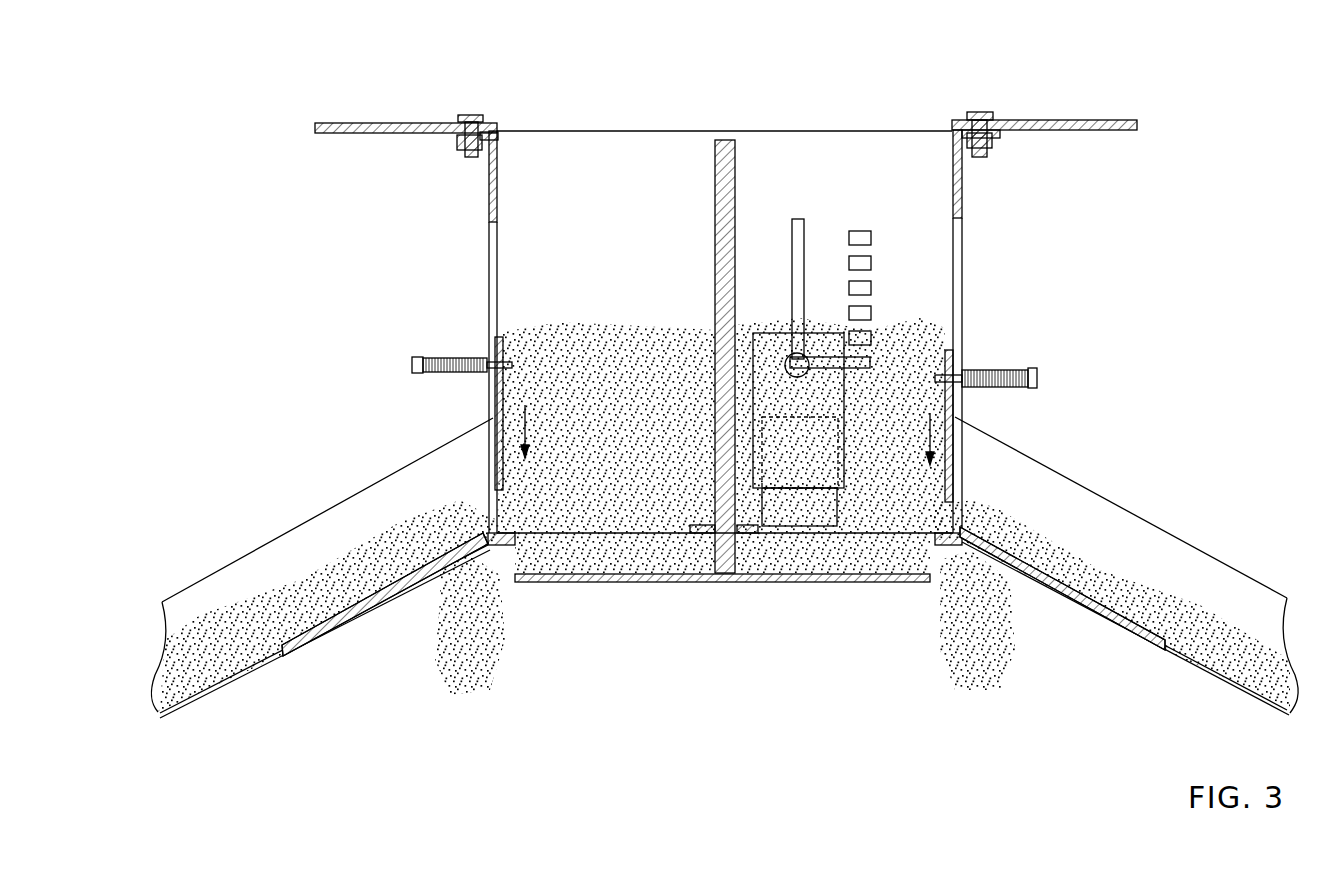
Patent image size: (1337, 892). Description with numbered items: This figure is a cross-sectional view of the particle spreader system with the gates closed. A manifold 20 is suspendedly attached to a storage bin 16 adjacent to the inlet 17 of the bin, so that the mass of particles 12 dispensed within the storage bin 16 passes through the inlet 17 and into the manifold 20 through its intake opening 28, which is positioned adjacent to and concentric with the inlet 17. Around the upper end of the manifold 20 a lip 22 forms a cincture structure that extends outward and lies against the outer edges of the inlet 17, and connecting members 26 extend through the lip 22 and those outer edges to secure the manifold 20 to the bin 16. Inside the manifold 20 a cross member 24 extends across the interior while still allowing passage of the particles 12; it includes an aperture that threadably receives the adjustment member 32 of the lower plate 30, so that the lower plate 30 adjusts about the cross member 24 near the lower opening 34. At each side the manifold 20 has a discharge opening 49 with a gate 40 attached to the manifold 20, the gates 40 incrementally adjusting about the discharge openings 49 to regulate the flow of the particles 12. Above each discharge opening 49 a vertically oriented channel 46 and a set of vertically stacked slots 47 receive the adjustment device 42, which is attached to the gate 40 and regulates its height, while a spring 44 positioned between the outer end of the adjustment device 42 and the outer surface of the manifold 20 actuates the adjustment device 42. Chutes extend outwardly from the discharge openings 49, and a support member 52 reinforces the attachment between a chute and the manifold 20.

The mass of particles 12 is at (475, 690).
The storage bin 16 is at (1078, 124).
The inlet 17 is at (497, 131).
The manifold 20 is at (962, 208).
The lip 22 is at (460, 142).
The cross member 24 is at (700, 528).
The connecting members 26 is at (467, 158).
The intake opening 28 is at (498, 204).
The lower plate 30 is at (898, 582).
The adjustment member 32 is at (738, 140).
The lower opening 34 is at (555, 533).
The gates 40 is at (500, 350).
The adjustment device 42 is at (399, 378).
The spring 44 is at (430, 373).
The channel 46 is at (797, 219).
The slots 47 is at (852, 231).
The discharge openings 49 is at (490, 452).
The support member 52 is at (345, 623).